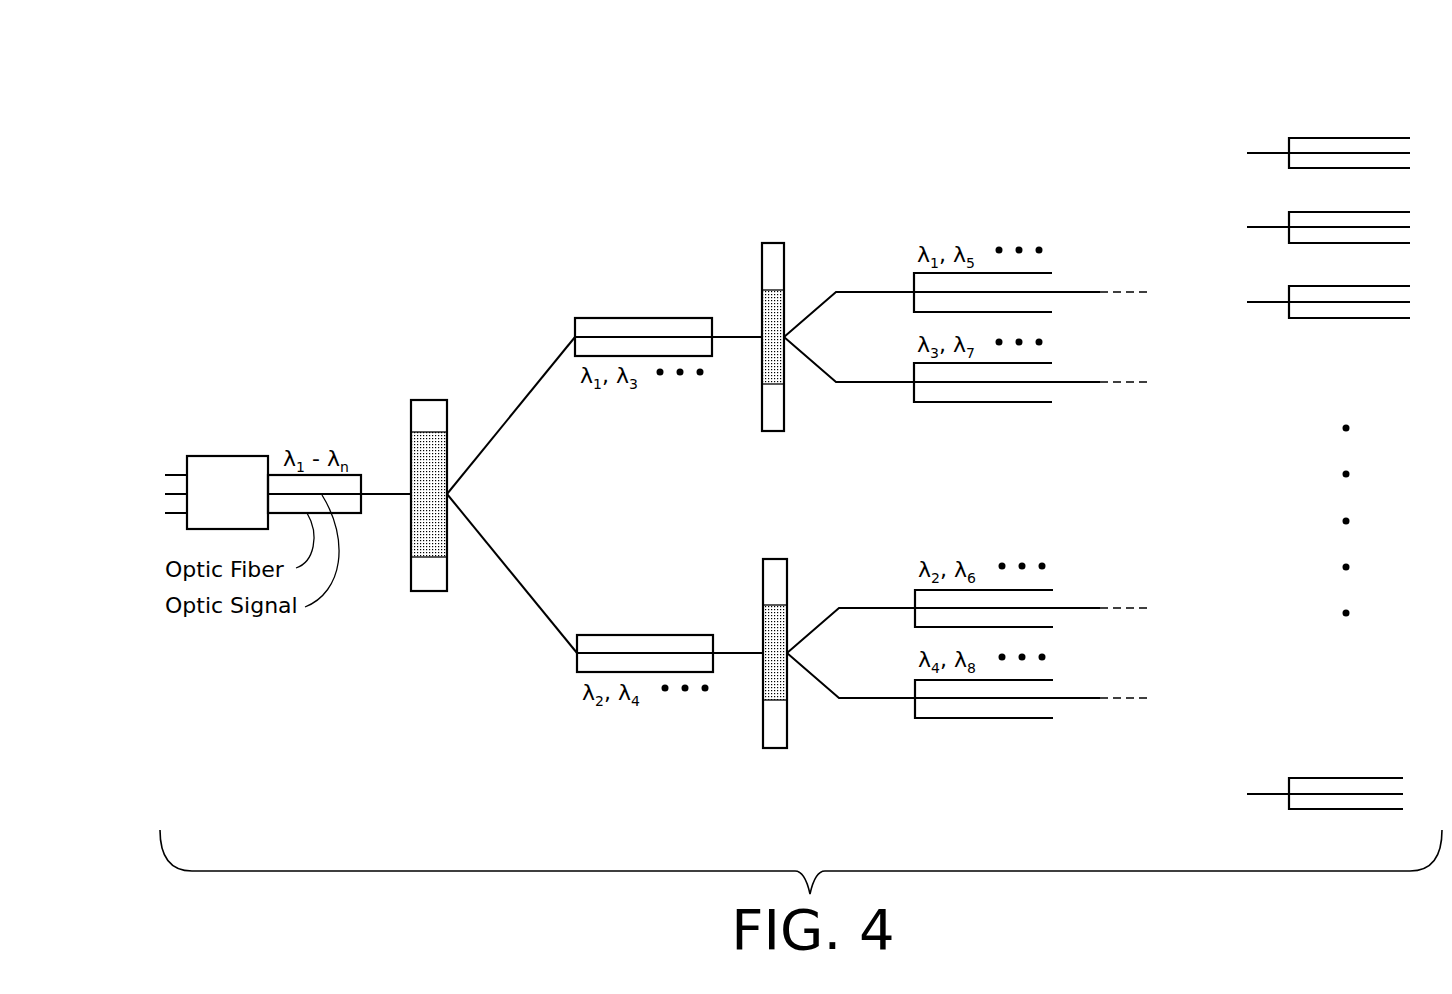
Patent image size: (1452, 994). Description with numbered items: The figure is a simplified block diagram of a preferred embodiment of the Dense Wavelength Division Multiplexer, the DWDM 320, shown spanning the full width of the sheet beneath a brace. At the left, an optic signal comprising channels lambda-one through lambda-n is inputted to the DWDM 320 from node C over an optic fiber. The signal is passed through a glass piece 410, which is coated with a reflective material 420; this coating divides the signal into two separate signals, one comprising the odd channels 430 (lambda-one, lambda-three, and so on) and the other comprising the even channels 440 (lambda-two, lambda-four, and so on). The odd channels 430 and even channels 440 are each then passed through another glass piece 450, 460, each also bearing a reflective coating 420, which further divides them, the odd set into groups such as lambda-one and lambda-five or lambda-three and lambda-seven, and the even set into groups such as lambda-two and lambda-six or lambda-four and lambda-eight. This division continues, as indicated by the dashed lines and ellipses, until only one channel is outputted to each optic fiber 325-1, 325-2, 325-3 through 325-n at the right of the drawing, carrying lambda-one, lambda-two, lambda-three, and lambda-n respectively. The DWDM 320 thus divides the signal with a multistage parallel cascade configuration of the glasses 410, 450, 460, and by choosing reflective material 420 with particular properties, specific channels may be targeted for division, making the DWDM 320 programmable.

The DWDM 320 is at (508, 188).
The node C is at (222, 456).
The glass piece 410 is at (431, 400).
The reflective material 420 is at (411, 543).
The odd channels signal 430 is at (638, 337).
The even channels signal 440 is at (640, 653).
The glass piece 450 is at (784, 254).
The glass piece 460 is at (787, 568).
The optic fiber 325-1 is at (1328, 136).
The optic fiber 325-2 is at (1328, 210).
The optic fiber 325-3 is at (1328, 285).
The optic fiber 325-n is at (1325, 778).